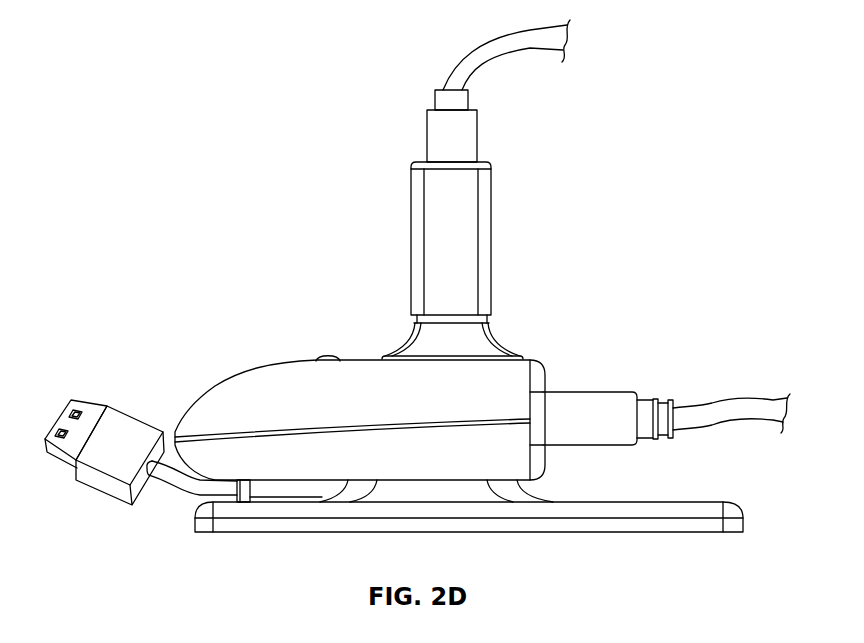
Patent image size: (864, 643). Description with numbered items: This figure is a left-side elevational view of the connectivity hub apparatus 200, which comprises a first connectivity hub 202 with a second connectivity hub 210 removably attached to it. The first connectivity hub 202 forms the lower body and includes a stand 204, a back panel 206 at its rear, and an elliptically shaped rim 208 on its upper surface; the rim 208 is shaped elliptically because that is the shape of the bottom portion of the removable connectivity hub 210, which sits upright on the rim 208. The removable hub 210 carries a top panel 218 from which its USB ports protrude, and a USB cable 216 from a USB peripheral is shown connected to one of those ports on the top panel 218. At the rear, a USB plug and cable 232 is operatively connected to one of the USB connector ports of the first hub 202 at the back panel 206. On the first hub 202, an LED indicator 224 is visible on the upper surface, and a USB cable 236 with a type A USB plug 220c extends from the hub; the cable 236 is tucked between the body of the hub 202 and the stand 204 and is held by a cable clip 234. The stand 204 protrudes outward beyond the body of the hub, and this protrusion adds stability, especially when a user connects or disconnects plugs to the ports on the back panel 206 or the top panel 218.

The connectivity hub apparatus 200 is at (149, 42).
The first connectivity hub 202 is at (231, 386).
The stand 204 is at (705, 533).
The back panel 206 is at (544, 372).
The elliptically shaped rim 208 is at (504, 340).
The second connectivity hub 210 is at (411, 243).
The USB cable 216 is at (427, 134).
The top panel 218 is at (493, 175).
The type "A" USB plug 220c is at (62, 468).
The LED indicator 224 is at (326, 357).
The USB plug and cable 232 is at (603, 392).
The cable clip 234 is at (245, 496).
The USB cable 236 is at (164, 487).